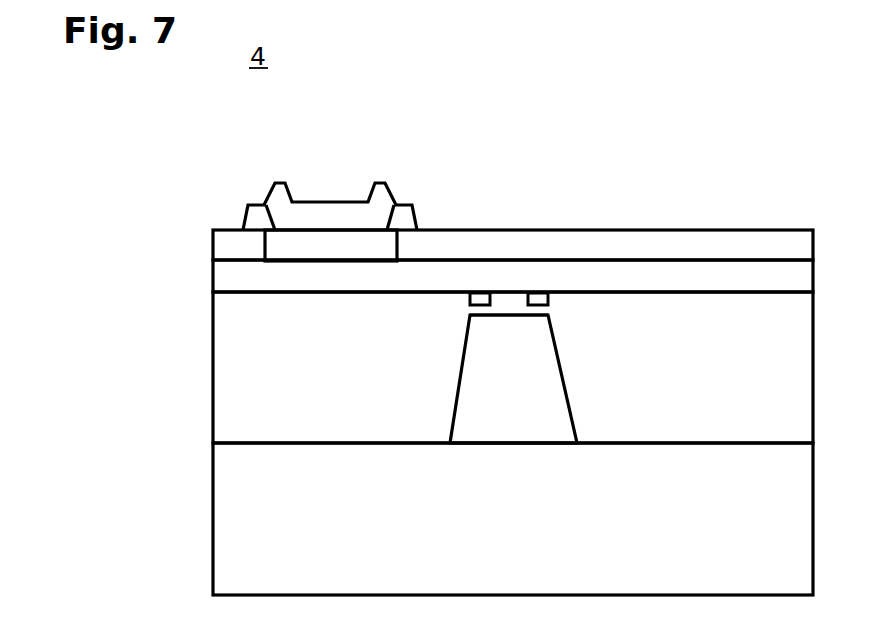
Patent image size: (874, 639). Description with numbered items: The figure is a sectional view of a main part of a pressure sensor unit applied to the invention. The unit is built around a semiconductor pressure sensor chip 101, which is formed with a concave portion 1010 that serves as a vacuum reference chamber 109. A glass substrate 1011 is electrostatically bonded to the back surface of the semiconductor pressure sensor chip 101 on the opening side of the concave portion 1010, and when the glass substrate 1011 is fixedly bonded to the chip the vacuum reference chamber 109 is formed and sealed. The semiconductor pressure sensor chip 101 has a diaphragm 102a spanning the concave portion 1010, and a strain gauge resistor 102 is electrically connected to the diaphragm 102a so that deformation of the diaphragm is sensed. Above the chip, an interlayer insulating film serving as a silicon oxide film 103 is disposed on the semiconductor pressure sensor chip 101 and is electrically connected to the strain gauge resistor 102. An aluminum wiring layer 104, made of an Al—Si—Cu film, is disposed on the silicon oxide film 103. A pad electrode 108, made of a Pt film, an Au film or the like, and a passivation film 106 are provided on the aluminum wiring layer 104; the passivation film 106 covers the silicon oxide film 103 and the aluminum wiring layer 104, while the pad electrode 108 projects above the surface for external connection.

The semiconductor pressure sensor chip 101 is at (242, 383).
The glass substrate 1011 is at (238, 530).
The concave portion 1010 is at (567, 390).
The strain gauge resistor 102 is at (468, 303).
The diaphragm 102a is at (495, 313).
The silicon oxide film 103 is at (242, 288).
The aluminum wiring layer 104 is at (288, 240).
The passivation film 106 is at (242, 243).
The pad electrode 108 is at (348, 192).
The vacuum reference chamber 109 is at (517, 402).